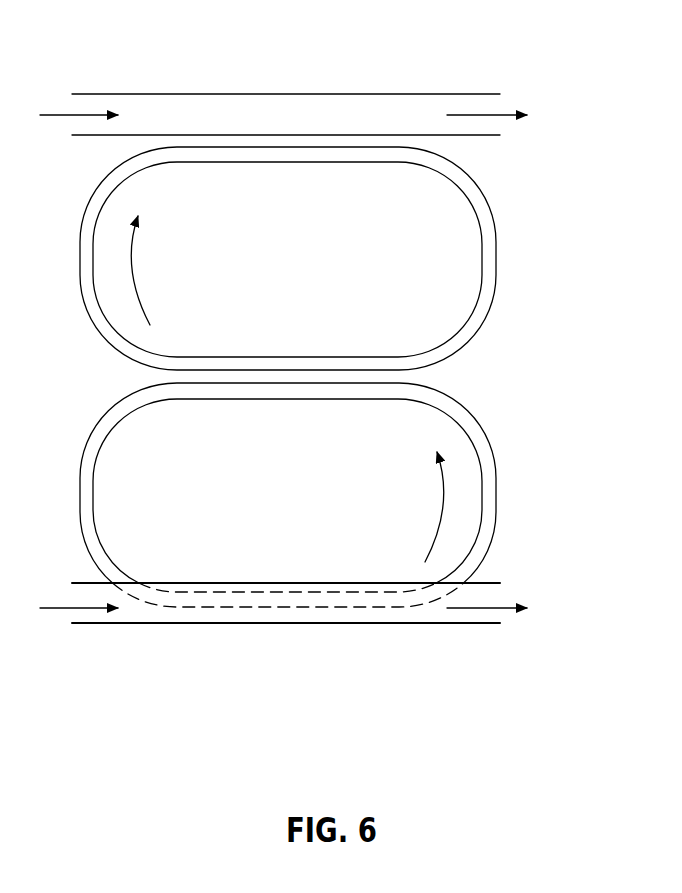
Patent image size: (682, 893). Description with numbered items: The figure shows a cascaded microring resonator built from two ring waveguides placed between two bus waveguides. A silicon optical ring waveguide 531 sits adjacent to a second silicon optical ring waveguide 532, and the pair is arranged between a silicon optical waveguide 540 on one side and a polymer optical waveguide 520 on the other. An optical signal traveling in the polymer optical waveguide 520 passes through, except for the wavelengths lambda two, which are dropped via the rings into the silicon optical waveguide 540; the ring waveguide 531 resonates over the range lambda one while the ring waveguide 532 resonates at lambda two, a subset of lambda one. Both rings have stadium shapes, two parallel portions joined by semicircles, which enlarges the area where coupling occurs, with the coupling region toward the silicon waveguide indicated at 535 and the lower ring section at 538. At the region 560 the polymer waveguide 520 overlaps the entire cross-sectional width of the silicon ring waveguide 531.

The polymer optical waveguide 520 is at (148, 623).
The silicon optical ring waveguide 531 is at (496, 512).
The silicon optical ring waveguide 532 is at (496, 273).
The coupling region between ring resonator and drop waveguide 535 is at (315, 143).
The waveguide section of ring resonator 538 is at (337, 608).
The silicon optical waveguide 540 is at (218, 94).
The overlap region 560 is at (272, 587).